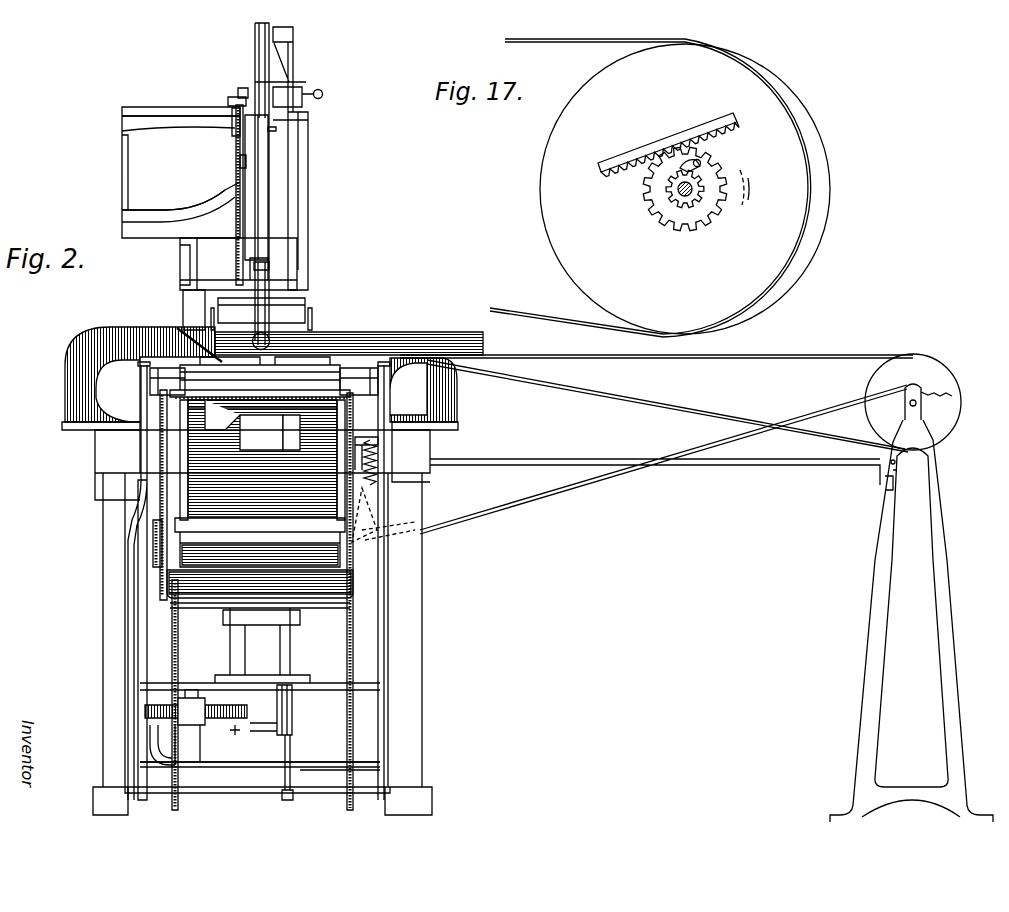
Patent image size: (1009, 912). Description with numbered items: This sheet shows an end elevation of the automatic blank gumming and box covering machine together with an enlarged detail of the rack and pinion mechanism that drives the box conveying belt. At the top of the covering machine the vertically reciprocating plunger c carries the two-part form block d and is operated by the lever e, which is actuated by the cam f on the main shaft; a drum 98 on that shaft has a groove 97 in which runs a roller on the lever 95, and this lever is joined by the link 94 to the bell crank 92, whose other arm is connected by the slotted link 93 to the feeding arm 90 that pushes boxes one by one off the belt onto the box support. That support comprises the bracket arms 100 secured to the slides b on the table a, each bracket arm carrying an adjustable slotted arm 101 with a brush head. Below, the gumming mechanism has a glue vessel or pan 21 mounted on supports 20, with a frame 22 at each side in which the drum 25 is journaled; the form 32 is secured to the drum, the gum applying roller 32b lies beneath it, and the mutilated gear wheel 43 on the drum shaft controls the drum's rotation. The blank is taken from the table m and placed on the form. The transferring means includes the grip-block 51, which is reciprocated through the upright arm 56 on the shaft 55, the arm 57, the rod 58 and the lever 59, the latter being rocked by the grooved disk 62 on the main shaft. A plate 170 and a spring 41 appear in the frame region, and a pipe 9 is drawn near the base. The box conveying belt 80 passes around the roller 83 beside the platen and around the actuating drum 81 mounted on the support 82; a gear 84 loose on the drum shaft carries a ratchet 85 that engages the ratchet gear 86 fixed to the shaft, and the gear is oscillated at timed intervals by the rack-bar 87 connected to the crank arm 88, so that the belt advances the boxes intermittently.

In FIG. 2, the plunger c is at (257, 62).
In FIG. 2, the lever e is at (292, 140).
In FIG. 2, the drum 98 is at (181, 172).
In FIG. 2, the groove 97 is at (183, 123).
In FIG. 2, the cam f is at (186, 214).
In FIG. 2, the link 94 is at (234, 126).
In FIG. 2, the lever 95 is at (243, 96).
In FIG. 2, the bell crank 92 is at (240, 178).
In FIG. 2, the link 93 is at (243, 263).
In FIG. 2, the feeding arm 90 is at (265, 340).
In FIG. 2, the form block d is at (306, 308).
In FIG. 2, the slotted arm 101 is at (210, 316).
In FIG. 2, the bracket arm 100 is at (132, 336).
In FIG. 2, the roller 83 is at (190, 336).
In FIG. 2, the grip-block 51 is at (168, 370).
In FIG. 2, the plate 170 is at (240, 380).
In FIG. 2, the drum 25 is at (262, 460).
In FIG. 2, the table m is at (272, 398).
In FIG. 2, the form 32 is at (286, 441).
In FIG. 2, the mutilated gear wheel 43 is at (159, 441).
In FIG. 2, the slides b is at (70, 428).
In FIG. 2, the table a is at (262, 464).
In FIG. 2, the upright arm 56 is at (126, 579).
In FIG. 2, the frame 22 is at (162, 490).
In FIG. 2, the spring 41 is at (376, 468).
In FIG. 2, the crank arm 88 is at (380, 522).
In FIG. 2, the gum applying roller 32b is at (260, 542).
In FIG. 2, the glue vessel 21 is at (260, 668).
In FIG. 2, the supports 20 is at (172, 626).
In FIG. 2, the grooved disk 62 is at (196, 707).
In FIG. 2, the rod 58 is at (293, 718).
In FIG. 2, the arm 57 is at (291, 757).
In FIG. 2, the pipe 9 is at (200, 745).
In FIG. 2, the lever 59 is at (237, 739).
In FIG. 2, the shaft 55 is at (260, 772).
In FIG. 2, the rack-bar 87 is at (537, 506).
In FIG. 17, the rack-bar 87 is at (633, 151).
In FIG. 2, the endless belt 80 is at (656, 394).
In FIG. 17, the endless belt 80 is at (529, 314).
In FIG. 2, the actuating drum 81 is at (913, 402).
In FIG. 17, the actuating drum 81 is at (685, 189).
In FIG. 2, the support 82 is at (890, 594).
In FIG. 17, the gear 84 is at (679, 220).
In FIG. 17, the ratchet gear 86 is at (668, 190).
In FIG. 17, the ratchet 85 is at (700, 164).